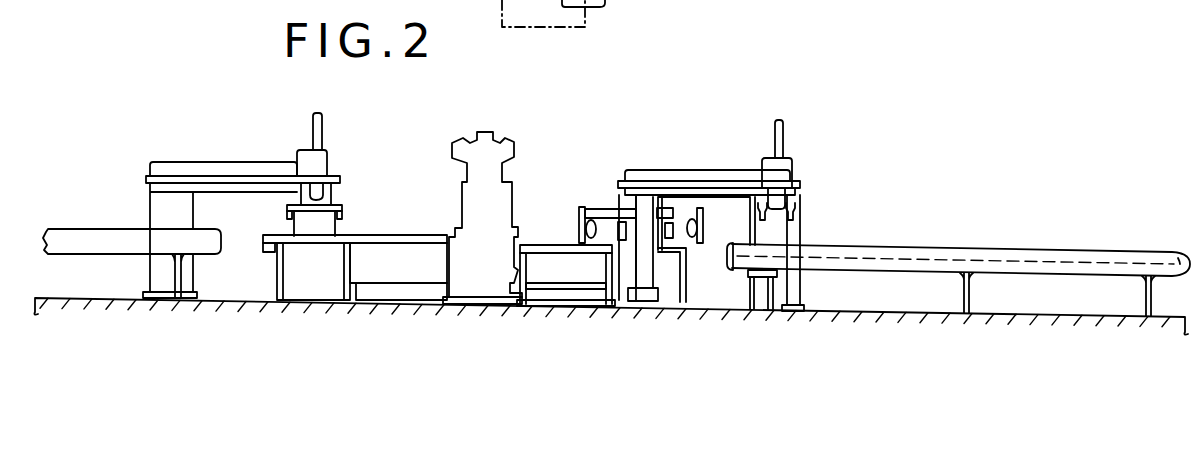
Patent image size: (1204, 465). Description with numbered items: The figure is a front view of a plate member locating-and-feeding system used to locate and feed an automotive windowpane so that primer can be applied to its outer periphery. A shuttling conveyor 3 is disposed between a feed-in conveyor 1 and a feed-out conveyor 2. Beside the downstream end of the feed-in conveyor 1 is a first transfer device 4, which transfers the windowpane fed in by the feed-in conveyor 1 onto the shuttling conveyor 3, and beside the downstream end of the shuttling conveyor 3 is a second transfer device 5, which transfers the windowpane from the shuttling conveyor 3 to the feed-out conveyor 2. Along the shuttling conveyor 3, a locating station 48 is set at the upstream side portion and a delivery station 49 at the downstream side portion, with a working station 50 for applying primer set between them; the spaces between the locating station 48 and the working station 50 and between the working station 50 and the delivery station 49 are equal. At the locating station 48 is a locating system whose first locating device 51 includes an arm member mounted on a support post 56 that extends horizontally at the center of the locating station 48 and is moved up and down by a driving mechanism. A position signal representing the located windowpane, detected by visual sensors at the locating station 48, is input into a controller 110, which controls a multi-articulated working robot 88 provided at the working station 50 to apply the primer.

The feed-in conveyor 1 is at (1037, 253).
The feed-out conveyor 2 is at (77, 235).
The shuttling conveyor 3 is at (385, 241).
The first transfer device 4 is at (710, 164).
The second transfer device 5 is at (212, 151).
The locating station 48 is at (686, 278).
The delivery station 49 is at (272, 276).
The working station 50 is at (521, 269).
The first locating device 51 is at (598, 208).
The support post 56 is at (645, 285).
The multi-articulated working robot 88 is at (522, 139).
The controller 110 is at (604, 7).